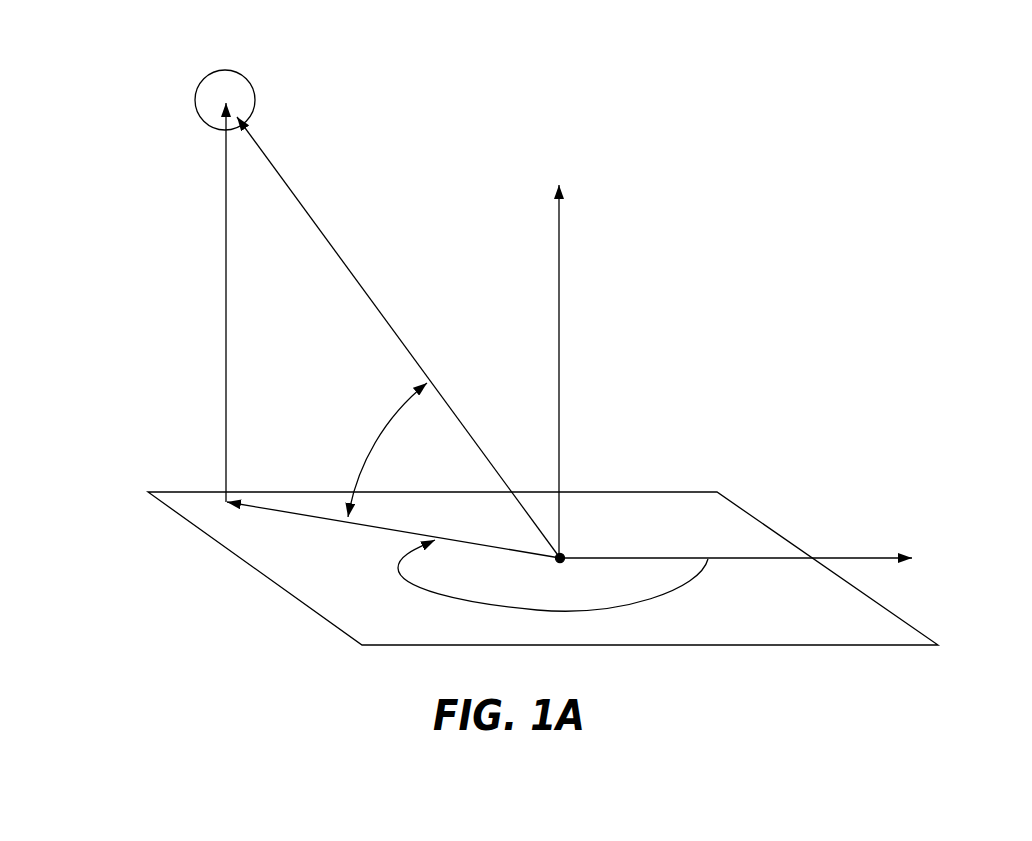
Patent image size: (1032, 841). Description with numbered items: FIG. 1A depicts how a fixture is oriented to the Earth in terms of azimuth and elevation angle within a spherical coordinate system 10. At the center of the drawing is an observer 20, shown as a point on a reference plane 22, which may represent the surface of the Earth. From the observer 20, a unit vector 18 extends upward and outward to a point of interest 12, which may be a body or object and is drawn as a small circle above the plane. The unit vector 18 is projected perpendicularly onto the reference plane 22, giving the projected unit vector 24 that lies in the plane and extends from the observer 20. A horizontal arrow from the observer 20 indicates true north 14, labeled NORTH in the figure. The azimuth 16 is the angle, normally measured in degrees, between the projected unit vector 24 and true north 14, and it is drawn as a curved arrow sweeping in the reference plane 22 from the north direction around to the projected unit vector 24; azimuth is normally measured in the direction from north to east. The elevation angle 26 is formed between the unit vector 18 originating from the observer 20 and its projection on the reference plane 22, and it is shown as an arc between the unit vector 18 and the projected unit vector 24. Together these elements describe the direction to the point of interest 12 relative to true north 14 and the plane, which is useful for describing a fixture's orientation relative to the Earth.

The spherical coordinate system 10 is at (117, 120).
The point of interest 12 is at (243, 72).
The true north 14 is at (903, 512).
The azimuth 16 is at (607, 605).
The unit vector 18 is at (370, 298).
The observer 20 is at (565, 551).
The reference plane 22 is at (920, 627).
The projected unit vector 24 is at (302, 515).
The elevation angle 26 is at (372, 455).